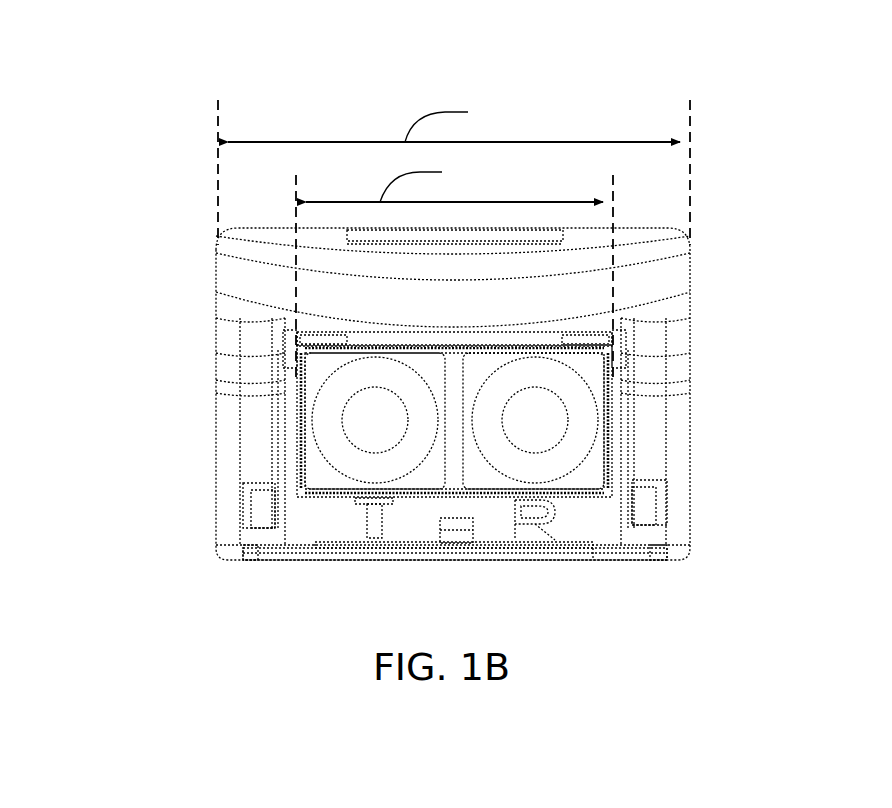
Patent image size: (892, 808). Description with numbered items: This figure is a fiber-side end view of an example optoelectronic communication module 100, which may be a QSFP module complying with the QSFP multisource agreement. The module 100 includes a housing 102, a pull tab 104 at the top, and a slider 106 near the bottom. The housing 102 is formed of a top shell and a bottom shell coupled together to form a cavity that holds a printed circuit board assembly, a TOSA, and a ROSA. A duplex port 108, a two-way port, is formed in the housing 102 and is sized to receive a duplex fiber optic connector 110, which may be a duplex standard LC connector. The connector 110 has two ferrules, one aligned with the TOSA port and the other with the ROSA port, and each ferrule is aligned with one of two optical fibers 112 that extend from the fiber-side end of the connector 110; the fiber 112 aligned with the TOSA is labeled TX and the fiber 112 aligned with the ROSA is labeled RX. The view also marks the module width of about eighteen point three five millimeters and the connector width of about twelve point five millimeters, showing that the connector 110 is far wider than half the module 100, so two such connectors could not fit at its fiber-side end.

The optoelectronic communication module 100 is at (190, 72).
The housing 102 is at (298, 530).
The pull tab 104 is at (220, 245).
The slider 106 is at (500, 560).
The duplex port 108 is at (410, 532).
The duplex fiber optic connector 110 is at (297, 401).
The optical fibers 112 is at (503, 418).